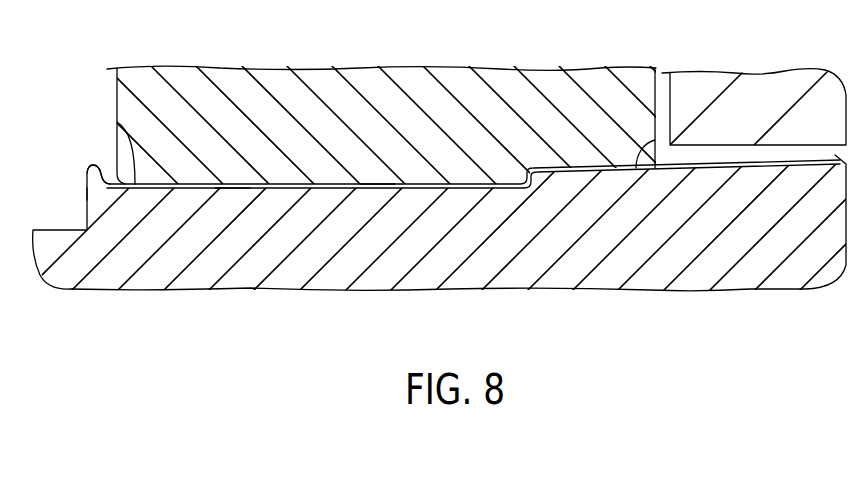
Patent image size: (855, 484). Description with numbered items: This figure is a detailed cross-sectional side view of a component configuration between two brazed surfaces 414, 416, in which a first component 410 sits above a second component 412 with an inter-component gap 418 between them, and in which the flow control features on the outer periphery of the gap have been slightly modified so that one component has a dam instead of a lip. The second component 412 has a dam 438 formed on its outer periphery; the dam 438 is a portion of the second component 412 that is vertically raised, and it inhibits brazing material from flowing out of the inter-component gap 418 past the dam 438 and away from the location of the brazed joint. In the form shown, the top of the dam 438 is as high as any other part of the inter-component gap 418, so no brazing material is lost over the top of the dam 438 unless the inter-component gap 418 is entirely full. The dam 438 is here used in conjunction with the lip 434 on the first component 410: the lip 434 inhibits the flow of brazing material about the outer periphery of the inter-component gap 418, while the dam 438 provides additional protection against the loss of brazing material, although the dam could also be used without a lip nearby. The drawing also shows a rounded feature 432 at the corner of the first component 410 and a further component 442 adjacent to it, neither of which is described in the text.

The first component 410 is at (590, 77).
The second component 412 is at (647, 283).
The brazed surface 414 is at (377, 184).
The brazed surface 416 is at (280, 188).
The inter-component gap 418 is at (232, 190).
The fillet 432 is at (637, 147).
The lip 434 is at (117, 126).
The dam 438 is at (92, 168).
The third component 442 is at (781, 80).